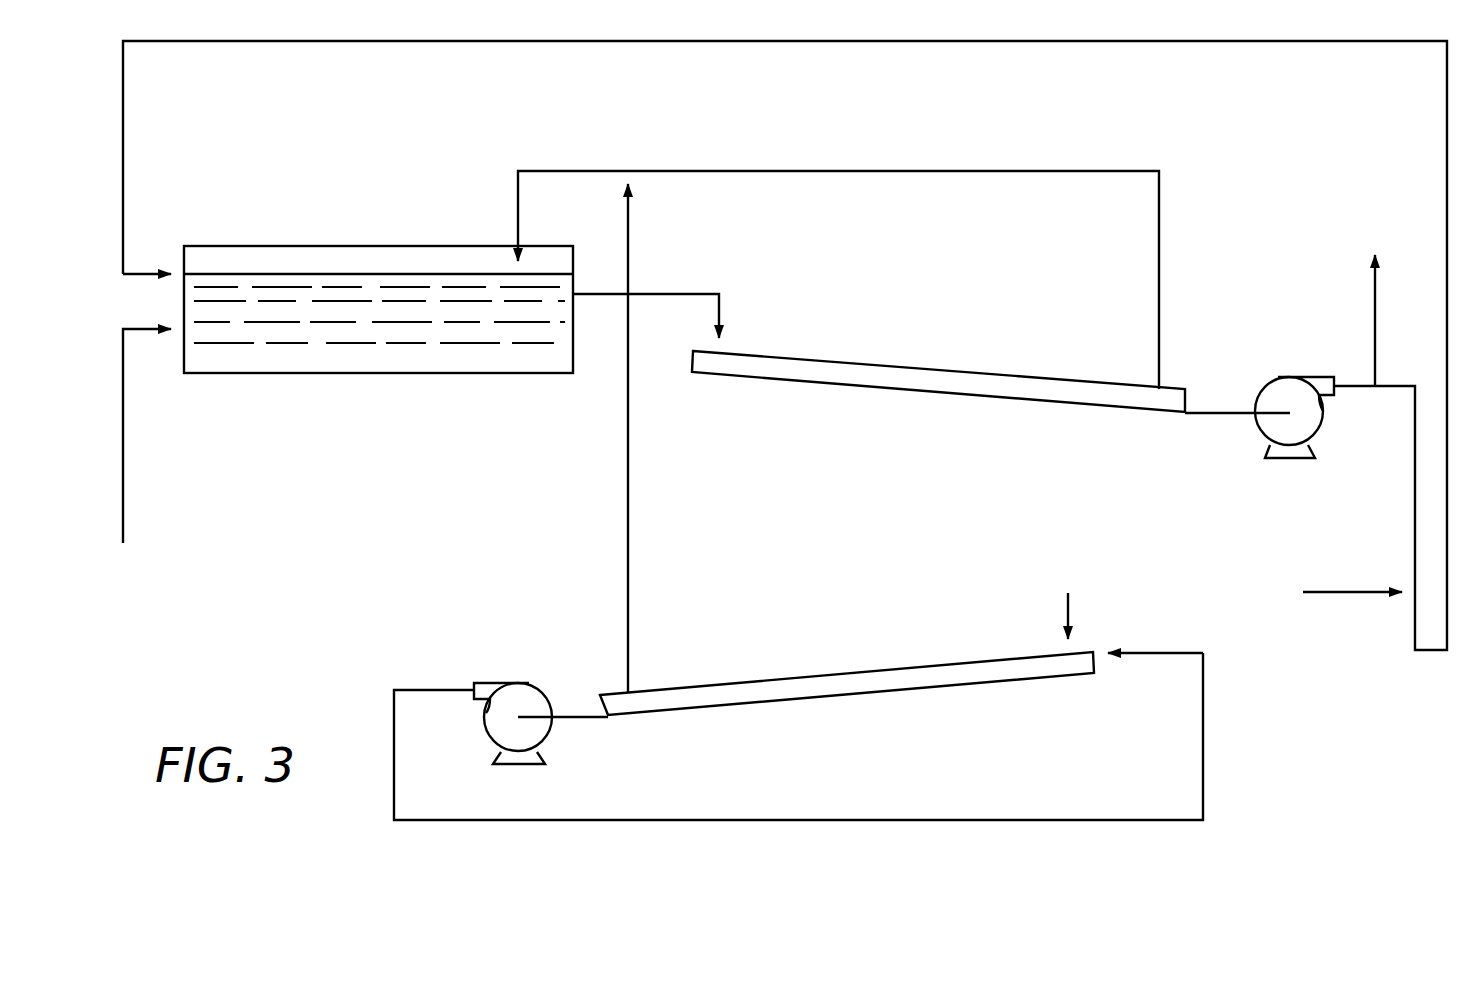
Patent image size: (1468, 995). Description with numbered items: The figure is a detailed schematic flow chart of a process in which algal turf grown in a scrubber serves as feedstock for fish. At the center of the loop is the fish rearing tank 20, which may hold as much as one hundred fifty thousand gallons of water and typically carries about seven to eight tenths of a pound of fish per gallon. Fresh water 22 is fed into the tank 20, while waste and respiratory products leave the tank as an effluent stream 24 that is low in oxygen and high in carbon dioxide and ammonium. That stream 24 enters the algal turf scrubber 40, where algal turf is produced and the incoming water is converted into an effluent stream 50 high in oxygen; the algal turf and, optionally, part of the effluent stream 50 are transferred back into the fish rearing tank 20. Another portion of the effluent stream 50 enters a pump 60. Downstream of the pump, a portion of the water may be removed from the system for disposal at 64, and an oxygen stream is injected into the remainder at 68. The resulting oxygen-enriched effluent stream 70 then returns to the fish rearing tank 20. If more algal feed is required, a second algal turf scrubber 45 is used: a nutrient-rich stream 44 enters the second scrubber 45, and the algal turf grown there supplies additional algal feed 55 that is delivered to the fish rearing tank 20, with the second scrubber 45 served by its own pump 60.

The fish rearing tank 20 is at (329, 244).
The water 22 is at (123, 470).
The effluent stream 24 is at (676, 292).
The algal turf scrubber 40 is at (929, 367).
The stream 44 is at (1065, 611).
The second algal turf scrubber 45 is at (862, 670).
The effluent stream 50 is at (1234, 411).
The algal feed 55 is at (628, 502).
The pump 60 is at (1288, 377).
The disposal removal point 64 is at (1372, 300).
The oxygen injection point 68 is at (1348, 590).
The oxygen-enriched effluent stream 70 is at (816, 38).